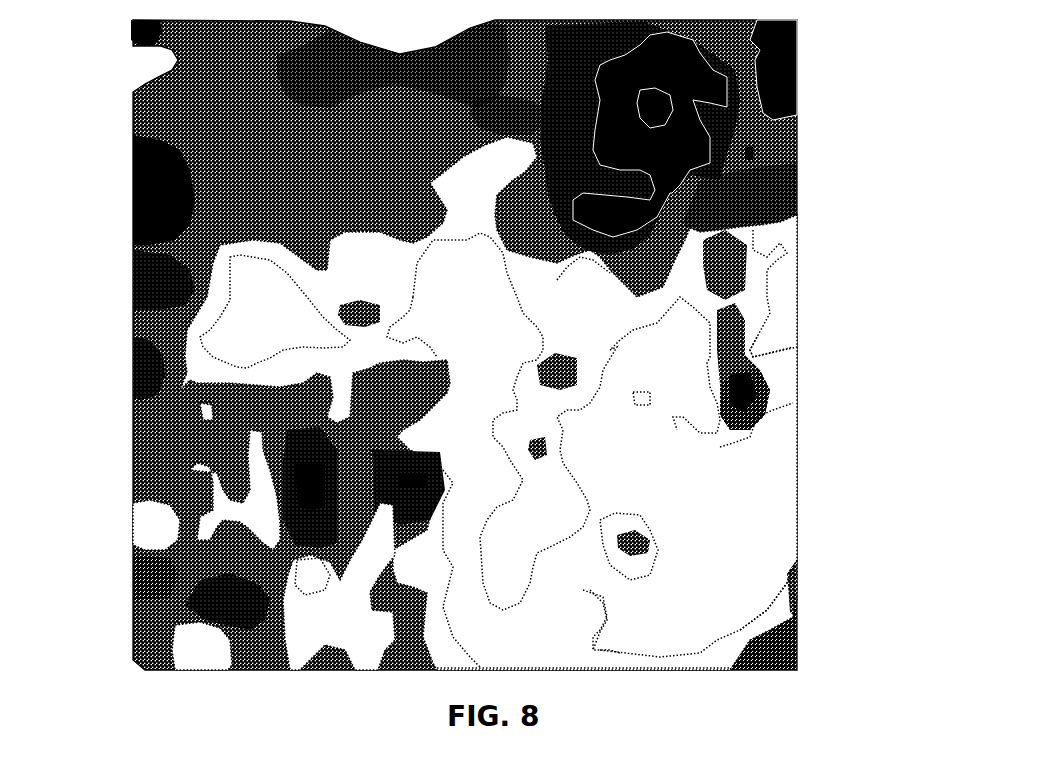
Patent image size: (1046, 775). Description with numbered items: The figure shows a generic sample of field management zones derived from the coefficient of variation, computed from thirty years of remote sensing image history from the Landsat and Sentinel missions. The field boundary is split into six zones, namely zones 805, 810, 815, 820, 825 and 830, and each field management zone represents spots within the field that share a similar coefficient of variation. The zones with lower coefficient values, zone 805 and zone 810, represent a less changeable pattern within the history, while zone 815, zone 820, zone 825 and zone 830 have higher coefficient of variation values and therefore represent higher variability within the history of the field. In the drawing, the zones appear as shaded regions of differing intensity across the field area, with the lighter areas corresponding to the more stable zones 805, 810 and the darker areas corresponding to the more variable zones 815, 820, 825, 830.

The field management zone 805 is at (800, 533).
The field management zone 810 is at (800, 375).
The field management zone 815 is at (130, 577).
The field management zone 820 is at (130, 285).
The field management zone 825 is at (130, 194).
The field management zone 830 is at (805, 62).